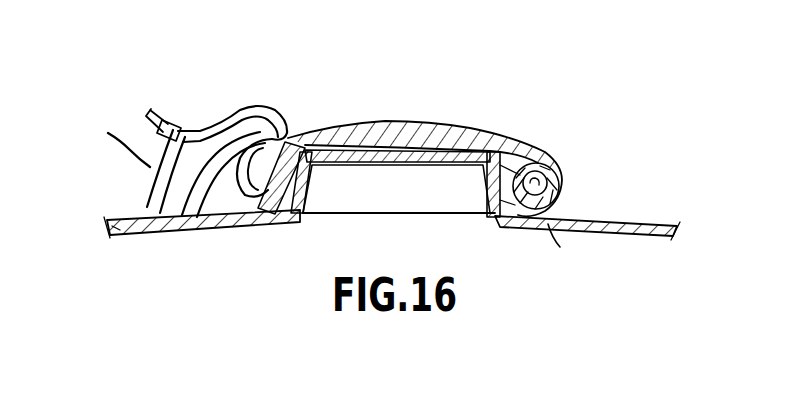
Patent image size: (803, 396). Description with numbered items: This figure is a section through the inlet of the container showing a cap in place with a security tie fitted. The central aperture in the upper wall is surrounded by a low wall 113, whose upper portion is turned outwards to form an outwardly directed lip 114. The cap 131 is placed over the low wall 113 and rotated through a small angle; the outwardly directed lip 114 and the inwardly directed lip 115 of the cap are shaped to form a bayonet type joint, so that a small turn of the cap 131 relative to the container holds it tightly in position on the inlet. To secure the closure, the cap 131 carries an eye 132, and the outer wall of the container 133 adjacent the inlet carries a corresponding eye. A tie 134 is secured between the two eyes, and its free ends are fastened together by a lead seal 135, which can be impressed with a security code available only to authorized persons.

The cap 131 is at (480, 58).
The eye 132 is at (363, 57).
The outer wall of the container 133 is at (290, 127).
The tie 134 is at (110, 105).
The lead seal 135 is at (203, 52).
The outwardly directed lip 114 is at (528, 173).
The inwardly directed lip 115 is at (490, 220).
The low wall 113 is at (608, 248).